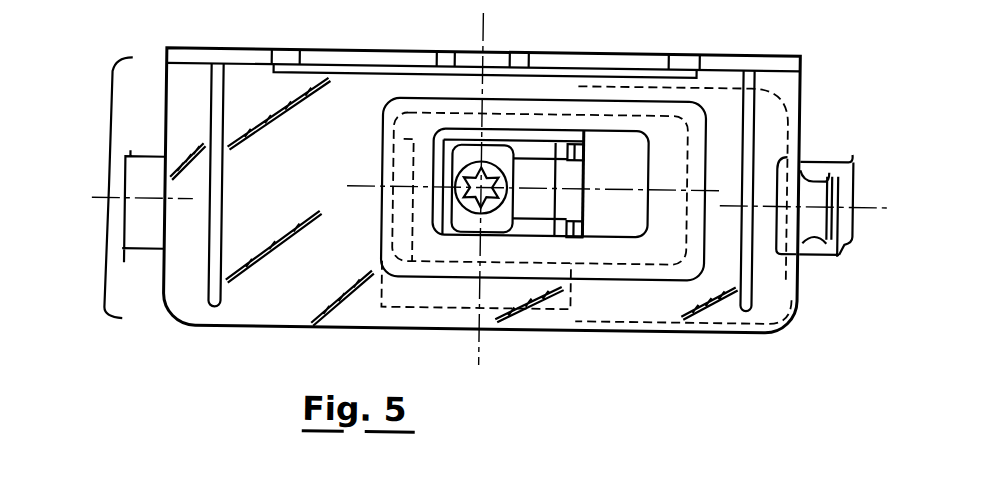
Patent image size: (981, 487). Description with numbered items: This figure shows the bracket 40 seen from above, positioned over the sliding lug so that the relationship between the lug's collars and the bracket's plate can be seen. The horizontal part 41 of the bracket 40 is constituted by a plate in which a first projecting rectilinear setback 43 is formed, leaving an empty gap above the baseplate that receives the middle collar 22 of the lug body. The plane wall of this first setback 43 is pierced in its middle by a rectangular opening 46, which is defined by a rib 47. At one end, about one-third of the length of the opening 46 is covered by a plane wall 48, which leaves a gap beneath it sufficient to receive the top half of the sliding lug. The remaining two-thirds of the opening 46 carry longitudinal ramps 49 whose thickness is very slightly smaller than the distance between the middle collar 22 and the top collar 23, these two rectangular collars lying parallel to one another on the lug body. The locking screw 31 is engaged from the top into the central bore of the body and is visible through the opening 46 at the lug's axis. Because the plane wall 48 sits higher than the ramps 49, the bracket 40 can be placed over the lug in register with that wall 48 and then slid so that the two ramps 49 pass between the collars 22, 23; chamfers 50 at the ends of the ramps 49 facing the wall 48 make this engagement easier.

The bracket 40 is at (265, 350).
The horizontal part of the bracket 41 is at (104, 193).
The locking screw 31 is at (447, 209).
The middle collar 22 is at (532, 177).
The top collar 23 is at (468, 234).
The first projecting rectilinear setback 43 is at (648, 275).
The rectangular opening 46 is at (549, 230).
The rib 47 is at (555, 245).
The plane wall 48 is at (620, 211).
The longitudinal ramps 49 is at (527, 147).
The chamfers 50 is at (584, 142).